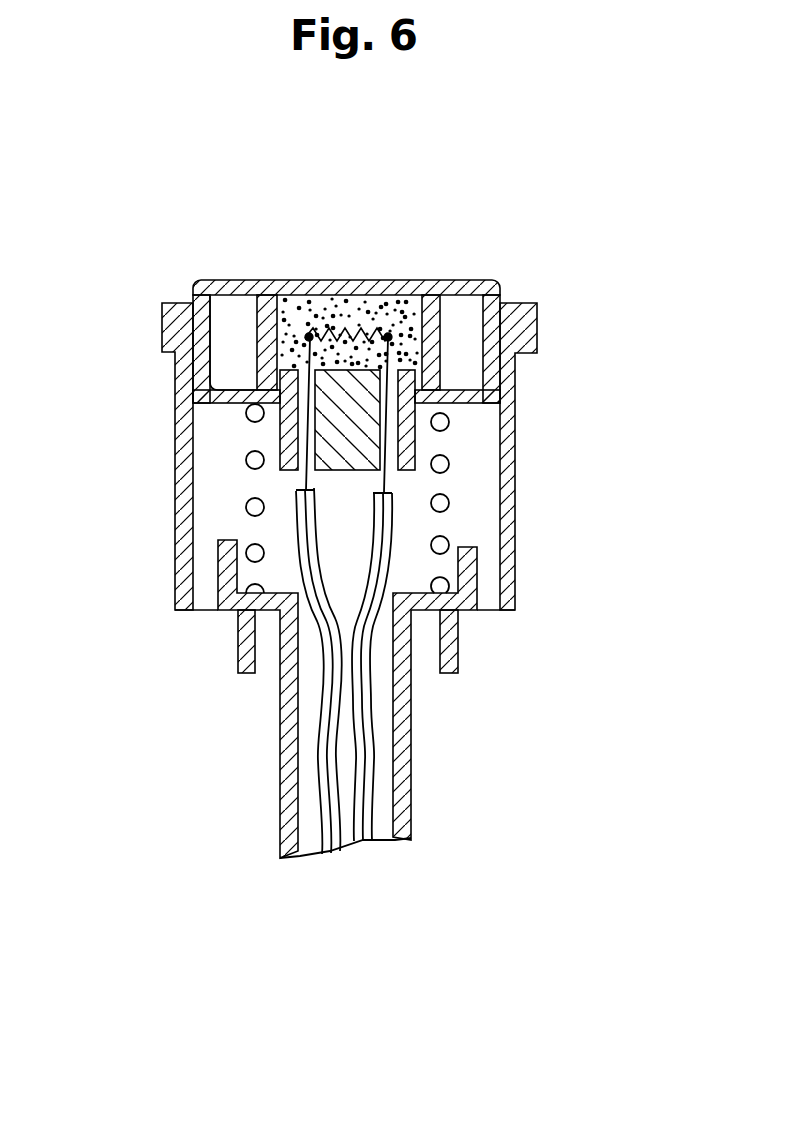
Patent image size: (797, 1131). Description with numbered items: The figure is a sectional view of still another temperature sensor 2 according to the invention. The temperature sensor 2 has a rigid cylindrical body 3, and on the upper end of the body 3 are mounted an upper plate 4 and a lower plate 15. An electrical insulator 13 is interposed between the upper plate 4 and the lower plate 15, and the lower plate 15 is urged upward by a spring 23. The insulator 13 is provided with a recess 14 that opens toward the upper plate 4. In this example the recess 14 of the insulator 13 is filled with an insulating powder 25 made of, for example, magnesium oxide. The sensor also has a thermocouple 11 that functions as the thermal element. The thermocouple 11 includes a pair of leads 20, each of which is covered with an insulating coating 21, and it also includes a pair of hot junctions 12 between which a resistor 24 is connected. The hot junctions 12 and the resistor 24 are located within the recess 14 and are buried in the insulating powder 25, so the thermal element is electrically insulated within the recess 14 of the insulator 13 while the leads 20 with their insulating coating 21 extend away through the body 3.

The temperature sensor 2 is at (541, 289).
The rigid cylindrical body 3 is at (508, 558).
The upper plate 4 is at (481, 287).
The thermocouple 11 is at (367, 843).
The hot junctions 12 is at (305, 335).
The electrical insulator 13 is at (263, 358).
The recess 14 is at (265, 315).
The lower plate 15 is at (478, 408).
The leads 20 is at (303, 481).
The insulating coating 21 is at (280, 860).
The spring 23 is at (448, 502).
The resistor 24 is at (335, 338).
The insulating powder 25 is at (419, 303).